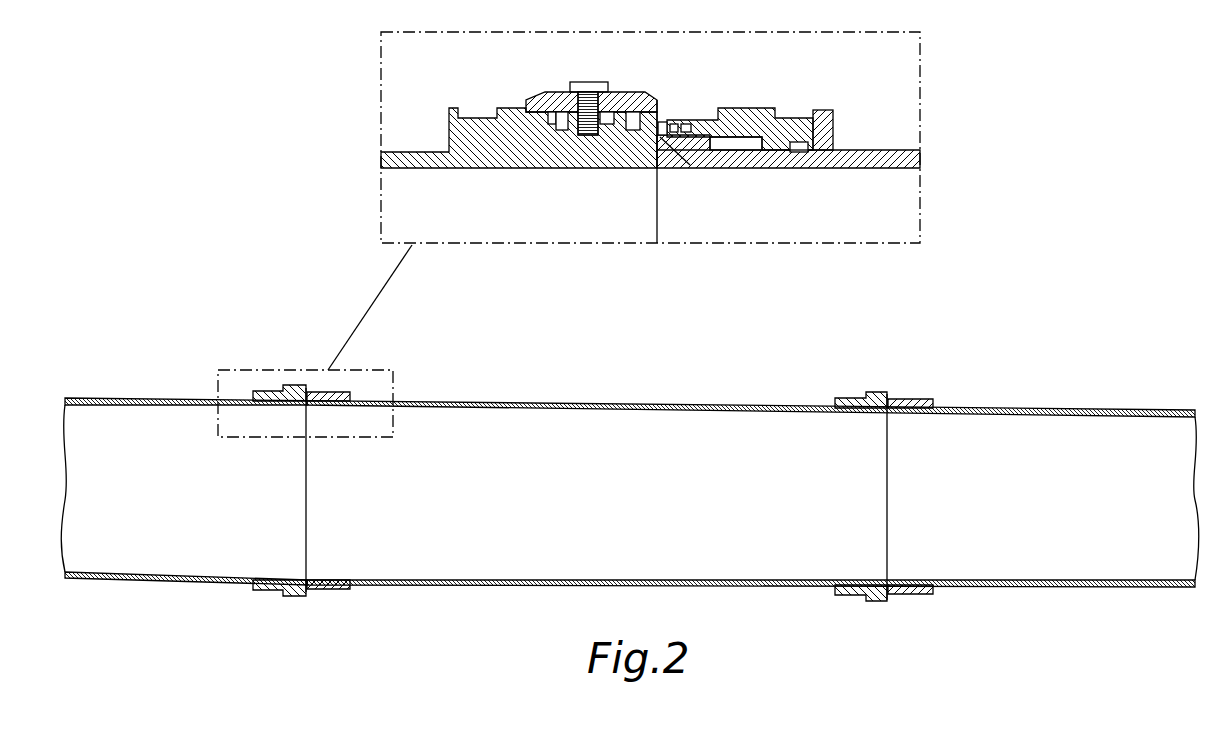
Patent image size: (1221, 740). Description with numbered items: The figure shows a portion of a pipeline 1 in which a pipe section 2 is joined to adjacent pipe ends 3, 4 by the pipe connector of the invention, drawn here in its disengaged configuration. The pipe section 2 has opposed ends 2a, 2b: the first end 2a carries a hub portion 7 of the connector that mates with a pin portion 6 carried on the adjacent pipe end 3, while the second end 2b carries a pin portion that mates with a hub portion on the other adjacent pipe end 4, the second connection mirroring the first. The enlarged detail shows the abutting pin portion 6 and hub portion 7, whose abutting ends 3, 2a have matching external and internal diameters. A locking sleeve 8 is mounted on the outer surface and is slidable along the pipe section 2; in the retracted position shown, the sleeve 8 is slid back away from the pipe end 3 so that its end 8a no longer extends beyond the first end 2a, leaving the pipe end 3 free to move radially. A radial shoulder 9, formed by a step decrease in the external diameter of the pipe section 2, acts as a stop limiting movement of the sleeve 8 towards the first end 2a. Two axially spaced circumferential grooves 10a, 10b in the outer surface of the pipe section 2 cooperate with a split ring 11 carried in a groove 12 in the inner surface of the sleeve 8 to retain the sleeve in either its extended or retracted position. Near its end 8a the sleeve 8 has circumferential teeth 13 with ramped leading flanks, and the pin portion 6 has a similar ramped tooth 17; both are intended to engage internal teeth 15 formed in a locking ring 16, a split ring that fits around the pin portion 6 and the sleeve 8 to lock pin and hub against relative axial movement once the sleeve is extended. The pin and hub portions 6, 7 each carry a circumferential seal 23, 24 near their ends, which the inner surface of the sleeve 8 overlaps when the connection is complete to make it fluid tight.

The pipeline 1 is at (623, 380).
The pipe section 2 is at (497, 582).
The first end 2a is at (308, 580).
The second end 2b is at (865, 602).
The pipe end 3 is at (165, 570).
The pipe end 4 is at (1010, 580).
The pin portion 6 is at (780, 177).
The hub portion 7 is at (487, 177).
The locking sleeve 8 is at (750, 110).
The end of the sleeve 8a is at (667, 120).
The radial shoulder 9 is at (705, 148).
The groove 10a is at (743, 145).
The groove 10b is at (798, 152).
The split ring 11 is at (810, 145).
The groove 12 is at (805, 128).
The teeth 13 is at (688, 128).
The internal teeth 15 is at (560, 122).
The locking ring 16 is at (548, 90).
The tooth 17 is at (548, 122).
The circumferential seal 23 is at (607, 126).
The circumferential seal 24 is at (678, 126).